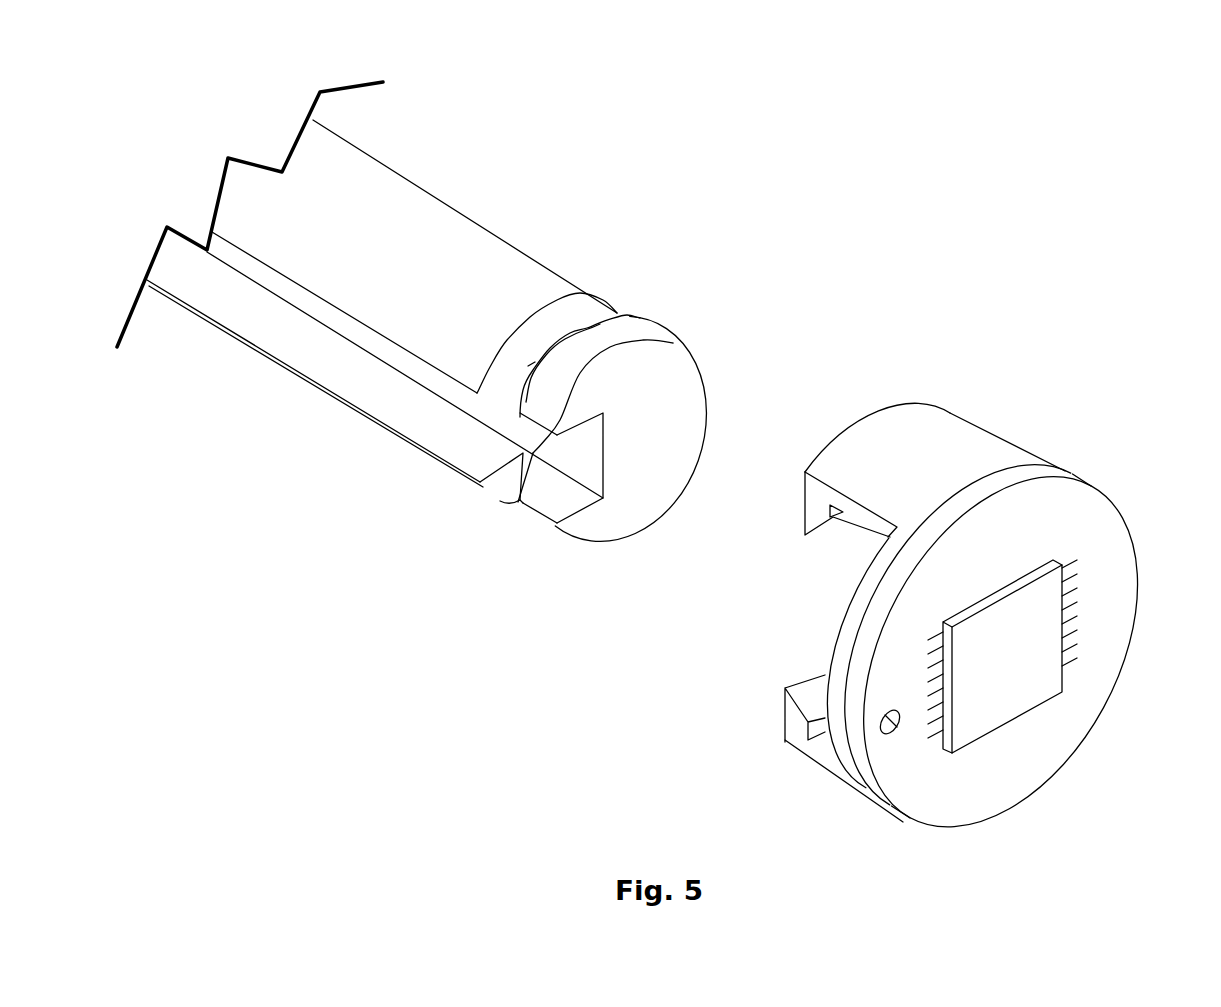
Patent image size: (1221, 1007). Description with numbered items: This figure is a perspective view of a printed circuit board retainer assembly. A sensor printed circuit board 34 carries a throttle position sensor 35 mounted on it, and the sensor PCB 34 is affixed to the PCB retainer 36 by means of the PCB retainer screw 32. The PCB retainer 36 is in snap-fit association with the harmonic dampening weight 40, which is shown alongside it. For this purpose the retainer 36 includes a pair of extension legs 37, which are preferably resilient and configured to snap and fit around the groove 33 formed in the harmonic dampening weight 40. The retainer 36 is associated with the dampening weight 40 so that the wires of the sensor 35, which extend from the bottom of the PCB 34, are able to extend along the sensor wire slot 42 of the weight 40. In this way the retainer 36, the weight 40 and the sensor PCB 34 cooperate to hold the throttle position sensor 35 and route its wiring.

The PCB retainer screw 32 is at (903, 722).
The groove 33 is at (507, 503).
The sensor printed circuit board 34 is at (1023, 733).
The throttle position sensor 35 is at (1027, 635).
The PCB retainer 36 is at (1030, 455).
The extension legs 37 is at (880, 427).
The harmonic dampening weight 40 is at (467, 255).
The sensor wire slot 42 is at (353, 328).